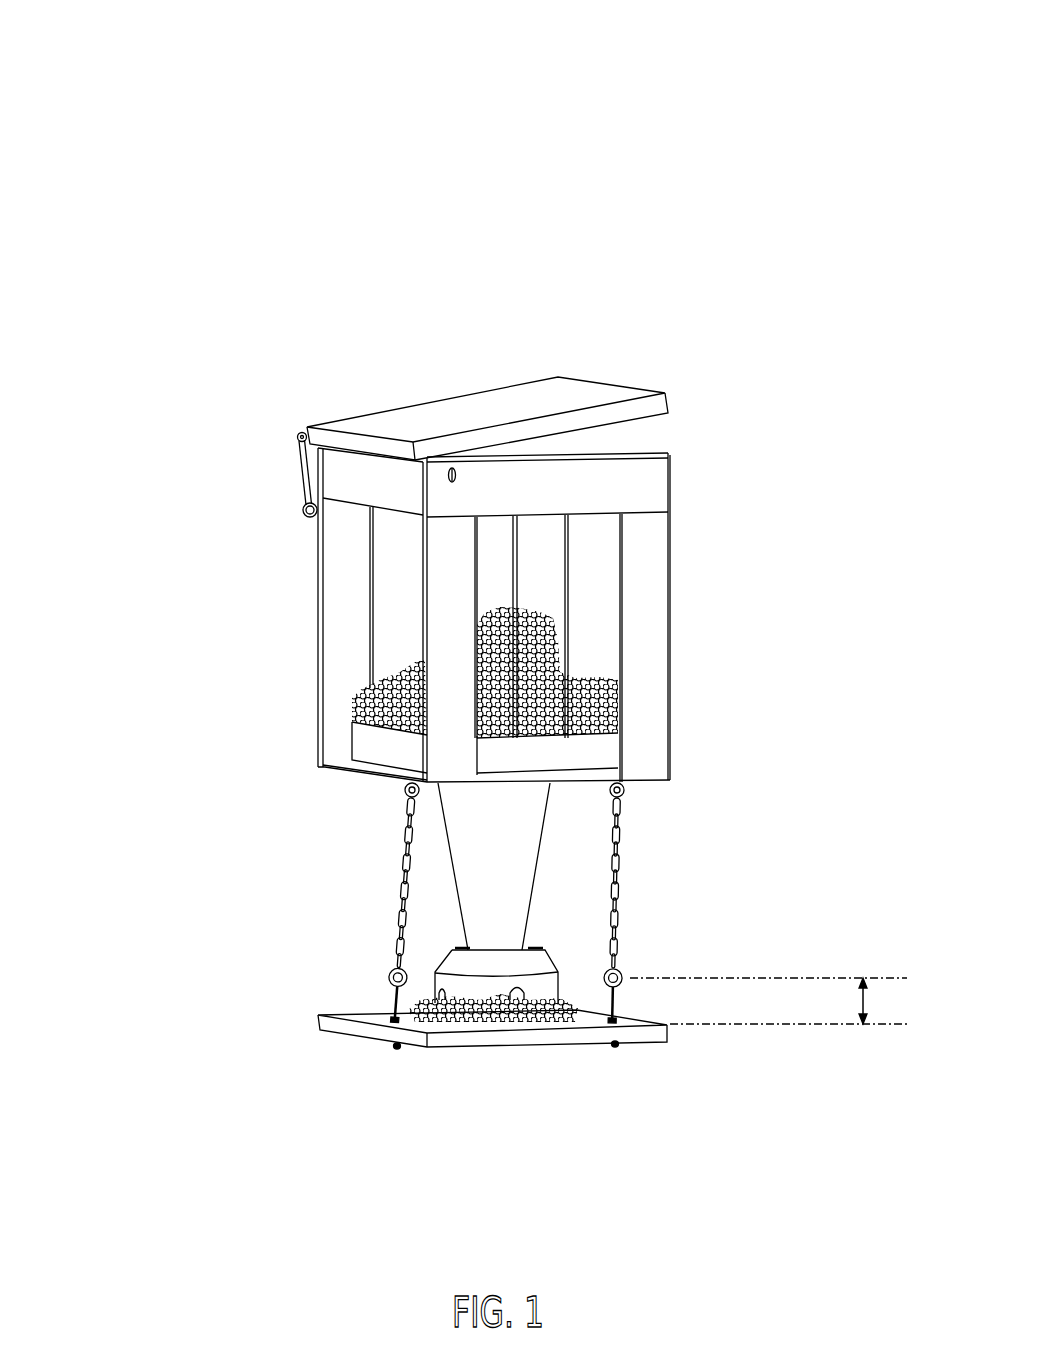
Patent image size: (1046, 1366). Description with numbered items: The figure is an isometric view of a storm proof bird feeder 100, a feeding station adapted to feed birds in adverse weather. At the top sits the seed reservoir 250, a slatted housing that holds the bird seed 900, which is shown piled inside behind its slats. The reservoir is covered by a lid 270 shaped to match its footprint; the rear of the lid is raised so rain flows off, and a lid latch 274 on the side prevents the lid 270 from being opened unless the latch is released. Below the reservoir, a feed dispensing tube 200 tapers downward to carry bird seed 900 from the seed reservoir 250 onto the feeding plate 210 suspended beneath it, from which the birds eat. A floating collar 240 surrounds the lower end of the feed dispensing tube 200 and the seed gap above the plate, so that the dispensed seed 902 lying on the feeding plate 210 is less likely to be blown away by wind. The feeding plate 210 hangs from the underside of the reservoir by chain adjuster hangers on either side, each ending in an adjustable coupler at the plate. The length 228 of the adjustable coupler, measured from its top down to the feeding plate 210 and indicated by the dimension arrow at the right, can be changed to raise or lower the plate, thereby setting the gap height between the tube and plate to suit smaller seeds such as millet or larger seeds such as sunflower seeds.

The storm proof bird feeder 100 is at (127, 173).
The seed reservoir 250 is at (692, 783).
The lid 270 is at (510, 412).
The lid latch 274 is at (302, 473).
The bird seed 900 is at (353, 720).
The feed dispensing tube 200 is at (482, 890).
The floating collar 240 is at (542, 963).
The feeding plate 210 is at (318, 1028).
The dispensed seed 902 is at (530, 1020).
The length of the adjustable coupler 228 is at (867, 1003).